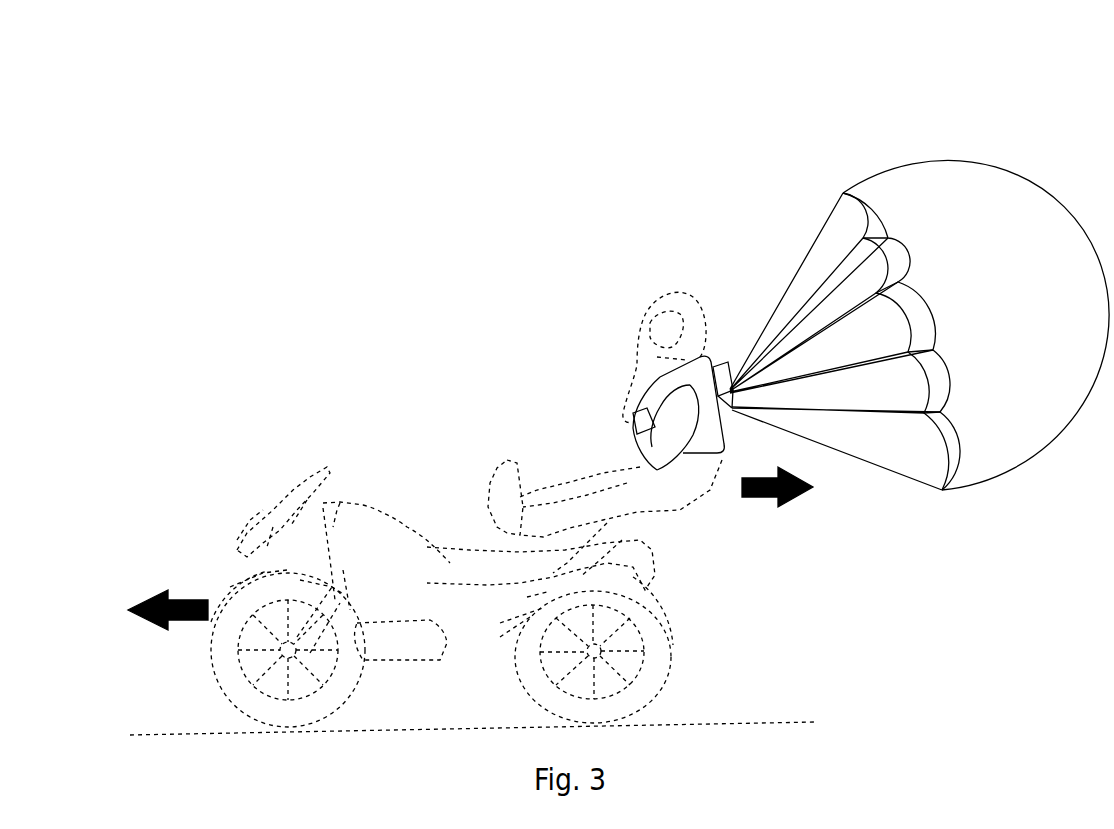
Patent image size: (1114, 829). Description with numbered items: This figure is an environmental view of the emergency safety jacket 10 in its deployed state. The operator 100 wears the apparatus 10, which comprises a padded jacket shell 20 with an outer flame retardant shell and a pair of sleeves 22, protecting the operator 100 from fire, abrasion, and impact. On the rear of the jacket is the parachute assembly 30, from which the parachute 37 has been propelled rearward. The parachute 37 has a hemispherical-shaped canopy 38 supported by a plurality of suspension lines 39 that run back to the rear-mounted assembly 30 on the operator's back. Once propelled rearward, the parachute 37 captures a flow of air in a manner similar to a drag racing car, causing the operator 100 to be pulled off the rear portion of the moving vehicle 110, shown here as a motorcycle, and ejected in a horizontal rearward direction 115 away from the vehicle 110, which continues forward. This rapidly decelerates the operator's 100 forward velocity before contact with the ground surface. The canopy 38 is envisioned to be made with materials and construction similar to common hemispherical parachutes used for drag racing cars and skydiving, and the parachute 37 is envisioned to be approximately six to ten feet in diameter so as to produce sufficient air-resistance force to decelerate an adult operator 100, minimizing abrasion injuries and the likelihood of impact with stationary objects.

The emergency safety jacket 10 is at (532, 313).
The jacket shell 20 is at (700, 440).
The sleeves 22 is at (673, 429).
The parachute assembly 30 is at (728, 362).
The parachute 37 is at (997, 478).
The canopy 38 is at (958, 217).
The suspension lines 39 is at (880, 303).
The operator 100 is at (653, 303).
The vehicle 110 is at (280, 483).
The rearward direction 115 is at (760, 498).